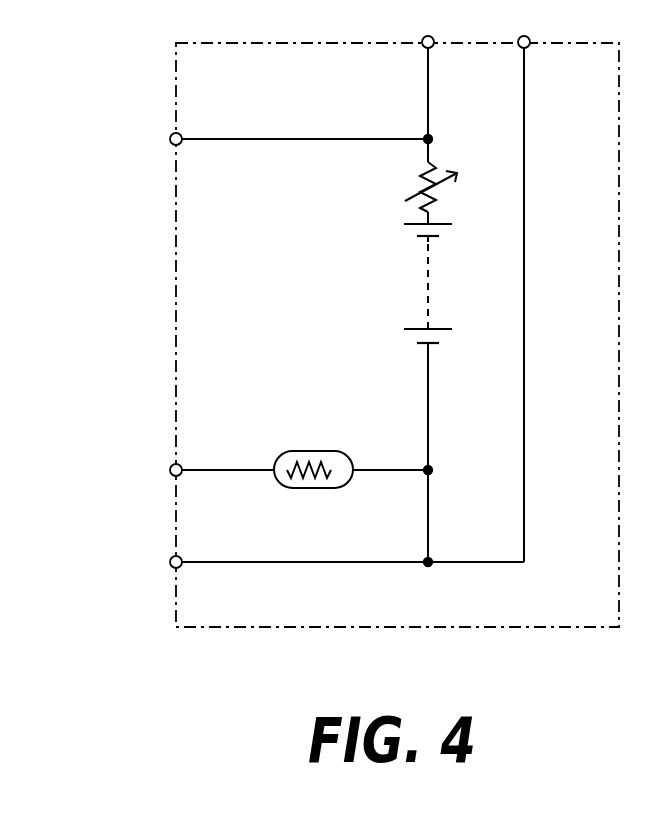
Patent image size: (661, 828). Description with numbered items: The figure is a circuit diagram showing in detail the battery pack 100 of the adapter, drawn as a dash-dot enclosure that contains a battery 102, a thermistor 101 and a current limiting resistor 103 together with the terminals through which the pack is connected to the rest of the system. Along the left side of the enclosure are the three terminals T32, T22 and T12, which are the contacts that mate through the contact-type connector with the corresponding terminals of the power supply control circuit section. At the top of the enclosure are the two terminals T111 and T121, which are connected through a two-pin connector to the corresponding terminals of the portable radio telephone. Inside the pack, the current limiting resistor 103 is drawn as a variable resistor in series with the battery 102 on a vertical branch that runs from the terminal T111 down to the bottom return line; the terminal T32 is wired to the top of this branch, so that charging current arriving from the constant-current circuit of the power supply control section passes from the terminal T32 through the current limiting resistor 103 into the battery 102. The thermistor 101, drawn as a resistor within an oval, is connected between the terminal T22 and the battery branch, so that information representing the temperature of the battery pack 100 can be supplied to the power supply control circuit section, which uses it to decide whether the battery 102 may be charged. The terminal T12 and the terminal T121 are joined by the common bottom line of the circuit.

The battery pack 100 is at (393, 600).
The thermistor 101 is at (312, 450).
The battery 102 is at (433, 270).
The current limiting resistor 103 is at (440, 190).
The terminal T111 is at (432, 36).
The terminal T121 is at (528, 36).
The terminal T32 is at (170, 139).
The terminal T22 is at (170, 470).
The terminal T12 is at (170, 560).